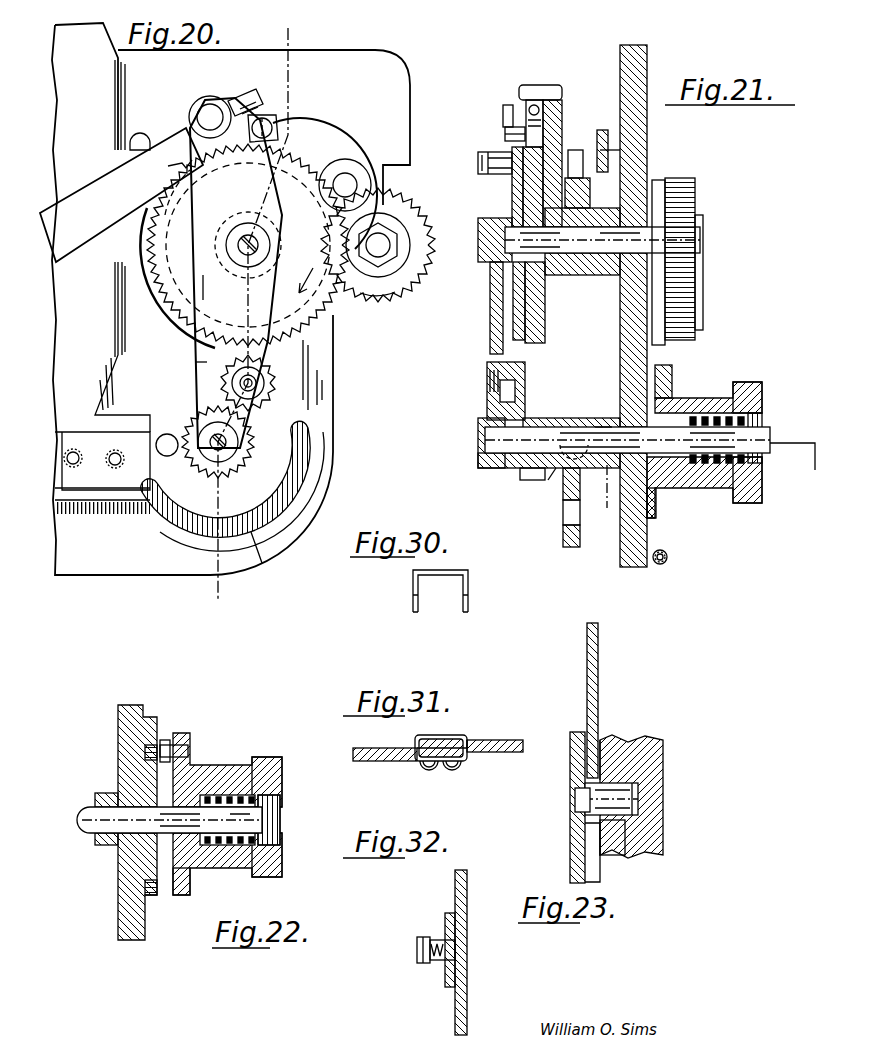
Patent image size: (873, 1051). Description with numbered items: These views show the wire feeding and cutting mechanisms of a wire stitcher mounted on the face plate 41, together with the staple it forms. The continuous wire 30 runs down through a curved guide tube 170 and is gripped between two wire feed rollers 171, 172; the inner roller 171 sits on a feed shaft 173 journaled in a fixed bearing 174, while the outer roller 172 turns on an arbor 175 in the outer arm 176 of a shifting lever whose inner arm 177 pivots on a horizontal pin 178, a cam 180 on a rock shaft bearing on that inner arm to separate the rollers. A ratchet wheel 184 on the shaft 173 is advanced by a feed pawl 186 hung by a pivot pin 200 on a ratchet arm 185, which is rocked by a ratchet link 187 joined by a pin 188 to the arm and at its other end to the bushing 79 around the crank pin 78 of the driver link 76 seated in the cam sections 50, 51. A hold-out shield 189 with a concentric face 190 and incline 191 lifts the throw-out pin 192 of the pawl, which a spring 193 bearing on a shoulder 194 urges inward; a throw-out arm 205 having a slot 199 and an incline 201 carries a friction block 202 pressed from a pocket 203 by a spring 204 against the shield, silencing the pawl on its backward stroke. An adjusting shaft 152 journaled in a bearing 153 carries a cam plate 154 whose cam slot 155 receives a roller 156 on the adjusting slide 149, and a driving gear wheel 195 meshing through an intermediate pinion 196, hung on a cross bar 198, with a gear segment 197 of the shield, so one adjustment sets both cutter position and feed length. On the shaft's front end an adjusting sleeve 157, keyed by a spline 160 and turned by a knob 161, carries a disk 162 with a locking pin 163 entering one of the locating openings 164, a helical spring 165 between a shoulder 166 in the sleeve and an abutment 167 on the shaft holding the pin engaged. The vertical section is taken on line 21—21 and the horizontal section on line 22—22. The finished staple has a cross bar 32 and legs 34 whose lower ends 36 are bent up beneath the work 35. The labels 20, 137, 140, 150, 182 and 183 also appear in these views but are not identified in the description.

In FIG. 23, the frame member 20 is at (622, 855).
In FIG. 20, the section line 21 is at (262, 318).
In FIG. 21, the section line 22 is at (654, 479).
In FIG. 21, the continuous piece of wire 30 is at (660, 565).
In FIG. 20, the upper cross bar 32 is at (248, 245).
In FIG. 30, the upper cross bar 32 is at (438, 575).
In FIG. 31, the upper cross bar 32 is at (441, 739).
In FIG. 30, the legs 34 is at (413, 603).
In FIG. 31, the legs 34 is at (405, 748).
In FIG. 31, the work 35 is at (380, 761).
In FIG. 30, the lower ends of the legs 36 is at (413, 612).
In FIG. 31, the lower ends of the legs 36 is at (428, 768).
In FIG. 20, the face plate 41 is at (231, 299).
In FIG. 21, the face plate 41 is at (648, 58).
In FIG. 22, the face plate 41 is at (118, 938).
In FIG. 23, the cam section 50 is at (610, 742).
In FIG. 23, the cam section 51 is at (652, 742).
In FIG. 23, the link 76 is at (572, 862).
In FIG. 23, the pin 78 is at (600, 806).
In FIG. 23, the cylindrical bushing 79 is at (578, 790).
In FIG. 23, the plate 137 is at (572, 732).
In FIG. 20, the base 140 is at (68, 514).
In FIG. 20, the adjusting slide 149 is at (112, 460).
In FIG. 20, the screw 150 is at (90, 452).
In FIG. 21, the adjusting shaft 152 is at (542, 485).
In FIG. 22, the adjusting shaft 152 is at (95, 824).
In FIG. 21, the bearing 153 is at (614, 420).
In FIG. 22, the bearing 153 is at (110, 795).
In FIG. 20, the cam plate 154 is at (305, 500).
In FIG. 21, the cam plate 154 is at (571, 548).
In FIG. 20, the cam slot 155 is at (270, 545).
In FIG. 21, the cam slot 155 is at (568, 515).
In FIG. 20, the pin or roller 156 is at (167, 433).
In FIG. 21, the adjusting sleeve 157 is at (688, 488).
In FIG. 22, the adjusting sleeve 157 is at (213, 862).
In FIG. 21, the spline or key 160 is at (575, 428).
In FIG. 21, the knob or handle 161 is at (762, 497).
In FIG. 22, the knob or handle 161 is at (262, 757).
In FIG. 21, the disk 162 is at (660, 520).
In FIG. 22, the disk 162 is at (180, 897).
In FIG. 22, the locating and locking pin 163 is at (172, 745).
In FIG. 21, the locating openings 164 is at (665, 365).
In FIG. 22, the locating openings 164 is at (145, 752).
In FIG. 21, the helical spring 165 is at (740, 382).
In FIG. 22, the helical spring 165 is at (232, 766).
In FIG. 21, the shoulder 166 is at (690, 395).
In FIG. 22, the shoulder 166 is at (200, 765).
In FIG. 21, the abutment or shoulder 167 is at (762, 425).
In FIG. 22, the abutment or shoulder 167 is at (280, 832).
In FIG. 21, the curved guide tube 170 is at (667, 560).
In FIG. 21, the inner wire feed roller 171 is at (665, 322).
In FIG. 20, the outer wire feed roller 172 is at (378, 246).
In FIG. 21, the feed shaft 173 is at (602, 240).
In FIG. 21, the fixed bearing 174 is at (605, 275).
In FIG. 20, the arbor 175 is at (390, 245).
In FIG. 20, the outer arm 176 is at (378, 213).
In FIG. 20, the inner arm 177 is at (322, 138).
In FIG. 21, the inner arm 177 is at (625, 145).
In FIG. 20, the horizontal pin 178 is at (350, 180).
In FIG. 20, the cam 180 is at (140, 142).
In FIG. 21, the ratchet wheel 182 is at (685, 178).
In FIG. 20, the gear teeth 183 is at (392, 303).
In FIG. 20, the ratchet wheel 184 is at (172, 318).
In FIG. 21, the ratchet wheel 184 is at (545, 317).
In FIG. 20, the ratchet arm 185 is at (183, 203).
In FIG. 21, the ratchet arm 185 is at (536, 185).
In FIG. 20, the feed pawl 186 is at (280, 135).
In FIG. 21, the feed pawl 186 is at (553, 140).
In FIG. 20, the ratchet link 187 is at (121, 195).
In FIG. 21, the ratchet link 187 is at (580, 193).
In FIG. 23, the ratchet link 187 is at (598, 676).
In FIG. 21, the pin 188 is at (600, 146).
In FIG. 20, the hold-out shield 189 is at (189, 287).
In FIG. 21, the hold-out shield 189 is at (512, 310).
In FIG. 32, the hold-out shield 189 is at (455, 1022).
In FIG. 20, the concentric hold-out face 190 is at (148, 232).
In FIG. 20, the inclined lifting face 191 is at (164, 165).
In FIG. 20, the throw-out pin 192 is at (274, 122).
In FIG. 21, the throw-out pin 192 is at (505, 133).
In FIG. 20, the spring 193 is at (255, 100).
In FIG. 21, the spring 193 is at (545, 103).
In FIG. 20, the shoulder 194 is at (243, 98).
In FIG. 21, the shoulder 194 is at (535, 88).
In FIG. 20, the driving gear wheel 195 is at (224, 452).
In FIG. 21, the driving gear wheel 195 is at (520, 478).
In FIG. 20, the intermediate gear pinion 196 is at (268, 393).
In FIG. 21, the intermediate gear pinion 196 is at (495, 404).
In FIG. 20, the gear segment 197 is at (312, 345).
In FIG. 20, the cross bar 198 is at (203, 363).
In FIG. 21, the cross bar 198 is at (495, 345).
In FIG. 20, the circumferentially extending slot 199 is at (196, 110).
In FIG. 20, the pivot pin 200 is at (206, 110).
In FIG. 21, the pivot pin 200 is at (503, 113).
In FIG. 20, the incline or cam surface 201 is at (268, 118).
In FIG. 32, the friction block 202 is at (447, 950).
In FIG. 21, the pocket 203 is at (478, 162).
In FIG. 32, the pocket 203 is at (440, 937).
In FIG. 32, the spring 204 is at (432, 944).
In FIG. 20, the throw-out arm 205 is at (248, 241).
In FIG. 21, the throw-out arm 205 is at (512, 198).
In FIG. 32, the throw-out arm 205 is at (448, 982).